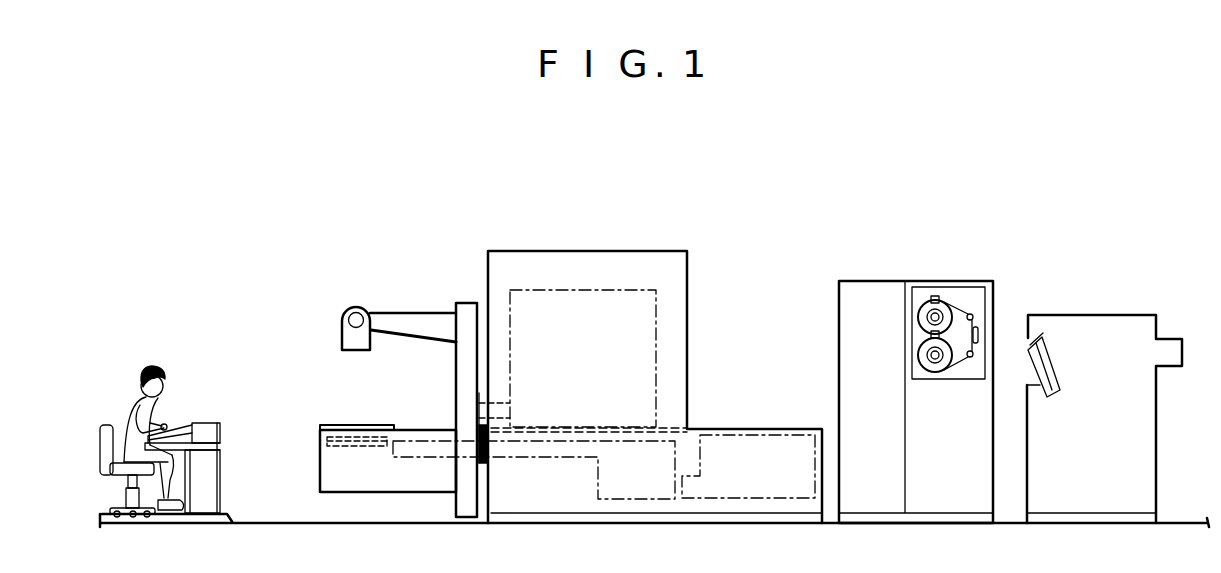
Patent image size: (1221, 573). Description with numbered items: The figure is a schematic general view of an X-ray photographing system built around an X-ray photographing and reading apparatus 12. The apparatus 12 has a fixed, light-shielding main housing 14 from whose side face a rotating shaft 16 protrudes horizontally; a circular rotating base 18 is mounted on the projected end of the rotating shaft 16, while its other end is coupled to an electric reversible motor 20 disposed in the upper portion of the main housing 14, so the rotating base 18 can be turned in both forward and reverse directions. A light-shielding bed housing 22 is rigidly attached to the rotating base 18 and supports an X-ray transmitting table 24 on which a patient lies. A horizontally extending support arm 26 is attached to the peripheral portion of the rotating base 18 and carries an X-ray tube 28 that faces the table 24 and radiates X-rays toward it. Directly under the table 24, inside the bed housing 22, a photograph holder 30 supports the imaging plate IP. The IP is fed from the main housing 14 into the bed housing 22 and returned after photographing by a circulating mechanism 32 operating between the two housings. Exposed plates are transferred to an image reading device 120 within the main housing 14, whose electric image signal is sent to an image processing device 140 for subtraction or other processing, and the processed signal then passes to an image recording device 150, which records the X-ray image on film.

The X-ray photographing and reading apparatus 12 is at (493, 214).
The main housing 14 is at (588, 250).
The rotating shaft 16 is at (478, 393).
The rotating base 18 is at (463, 302).
The electric reversible motor 20 is at (598, 288).
The bed housing 22 is at (418, 430).
The X-ray transmitting table 24 is at (336, 425).
The X-ray image converting plate (imaging plate) IP is at (365, 436).
The support arm 26 is at (392, 314).
The X-ray tube 28 is at (341, 330).
The photograph holder 30 is at (340, 446).
The circulating mechanism 32 is at (530, 460).
The image reading device 120 is at (752, 434).
The image processing device 140 is at (864, 280).
The image recording device 150 is at (1065, 318).